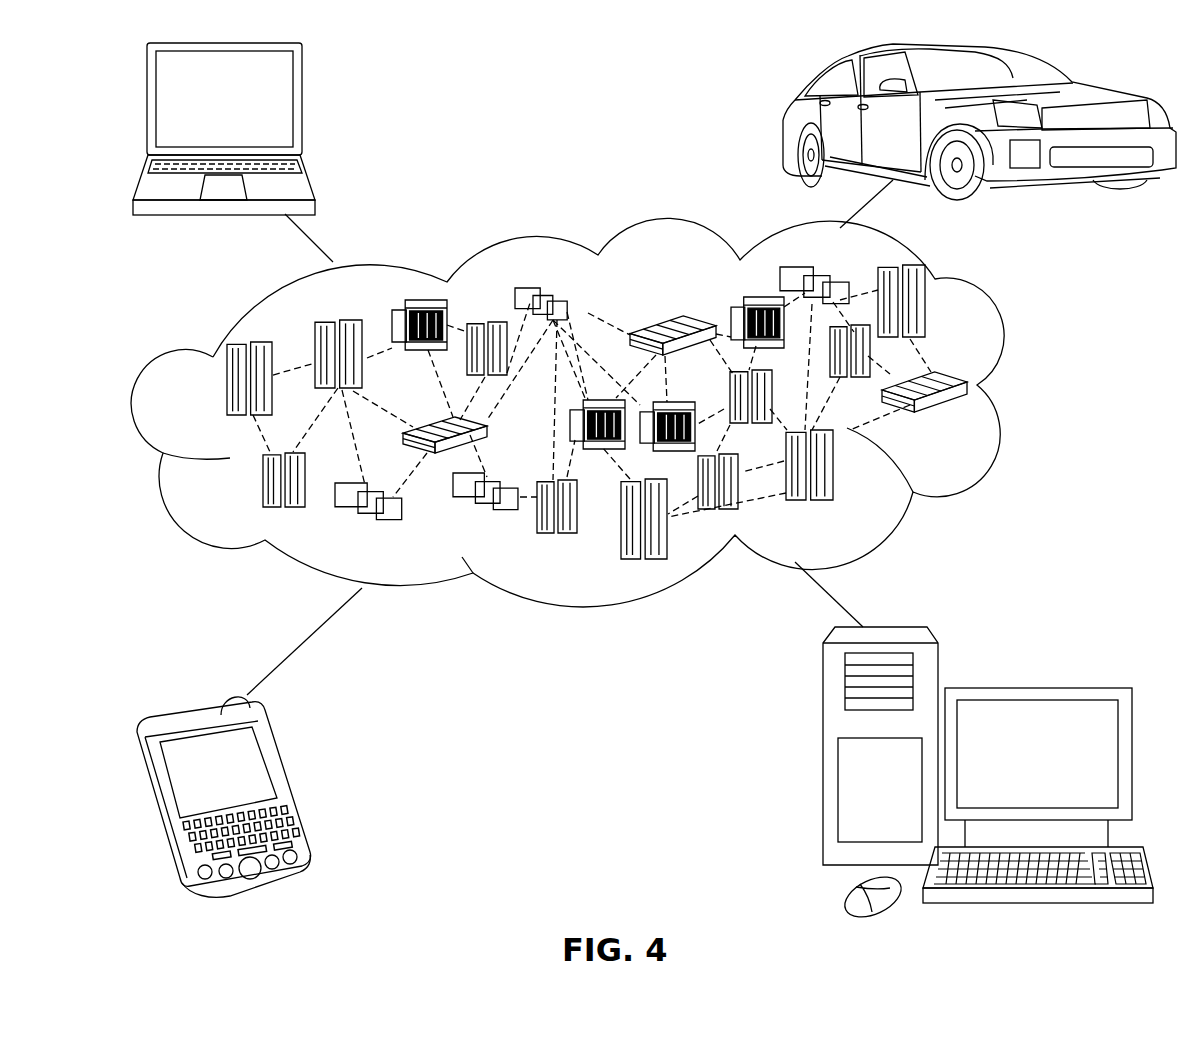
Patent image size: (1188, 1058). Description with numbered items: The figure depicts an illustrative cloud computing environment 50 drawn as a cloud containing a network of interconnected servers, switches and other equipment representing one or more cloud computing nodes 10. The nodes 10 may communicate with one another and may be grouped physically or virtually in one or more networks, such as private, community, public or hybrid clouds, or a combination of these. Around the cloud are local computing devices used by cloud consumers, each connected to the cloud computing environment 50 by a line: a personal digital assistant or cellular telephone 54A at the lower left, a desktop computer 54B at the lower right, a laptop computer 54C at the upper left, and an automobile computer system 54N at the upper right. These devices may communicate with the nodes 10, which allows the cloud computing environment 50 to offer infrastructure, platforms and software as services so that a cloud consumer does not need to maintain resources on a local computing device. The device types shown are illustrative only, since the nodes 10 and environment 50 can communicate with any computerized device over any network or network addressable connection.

The cloud computing environment 50 is at (1033, 388).
The cloud computing nodes 10 is at (975, 423).
The personal digital assistant (PDA) or cellular telephone 54A is at (288, 787).
The desktop computer 54B is at (1037, 688).
The laptop computer 54C is at (302, 107).
The automobile computer system 54N is at (792, 122).